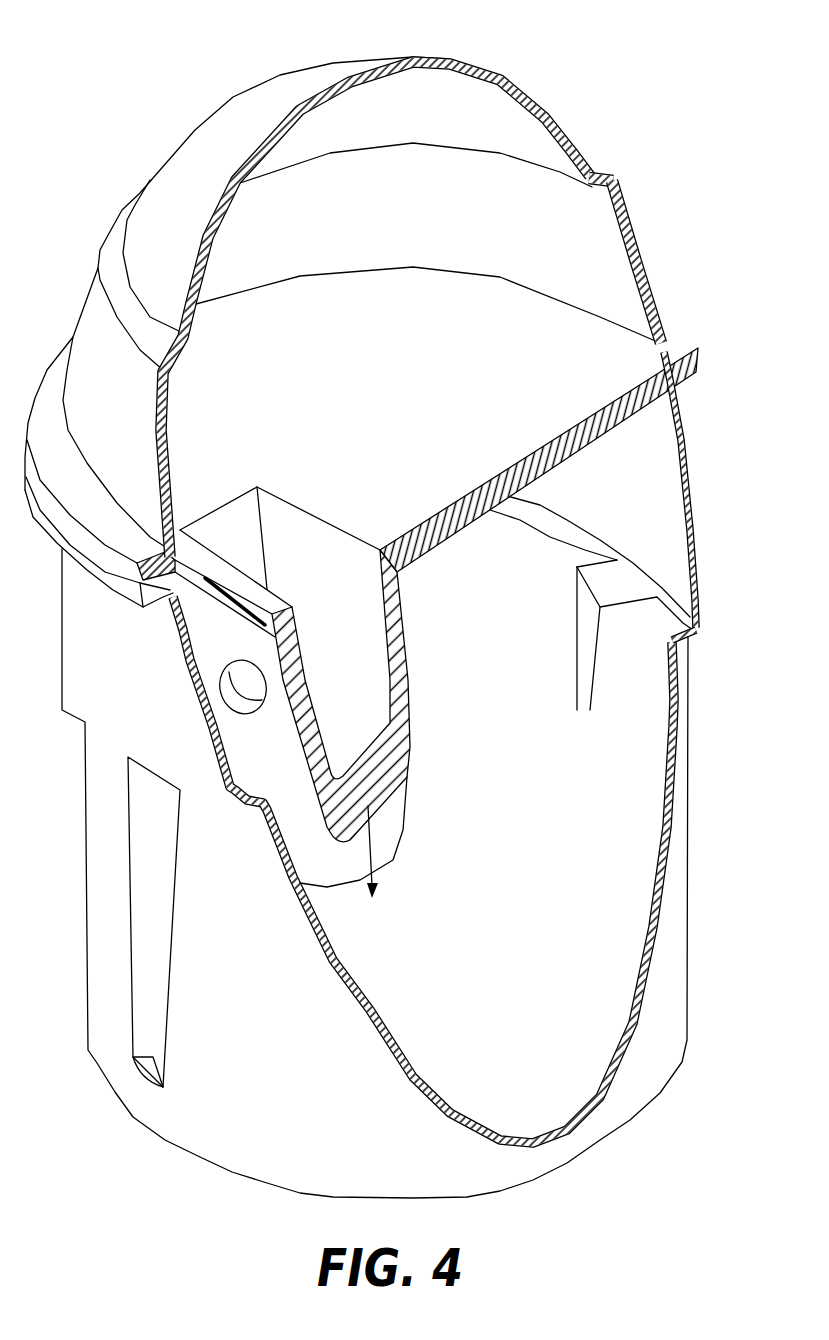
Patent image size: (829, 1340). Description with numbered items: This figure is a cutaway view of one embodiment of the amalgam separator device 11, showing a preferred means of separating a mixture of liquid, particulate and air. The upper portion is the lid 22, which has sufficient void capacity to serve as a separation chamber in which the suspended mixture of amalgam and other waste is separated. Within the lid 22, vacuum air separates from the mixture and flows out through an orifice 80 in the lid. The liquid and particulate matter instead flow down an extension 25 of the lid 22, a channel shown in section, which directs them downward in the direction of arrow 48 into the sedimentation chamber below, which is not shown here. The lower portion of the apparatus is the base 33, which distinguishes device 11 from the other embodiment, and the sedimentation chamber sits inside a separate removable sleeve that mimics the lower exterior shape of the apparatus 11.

The device 11 is at (538, 60).
The lid 22 is at (238, 120).
The extension 25 is at (407, 711).
The base 33 is at (283, 1187).
The arrow 48 is at (370, 851).
The orifice 80 is at (243, 682).